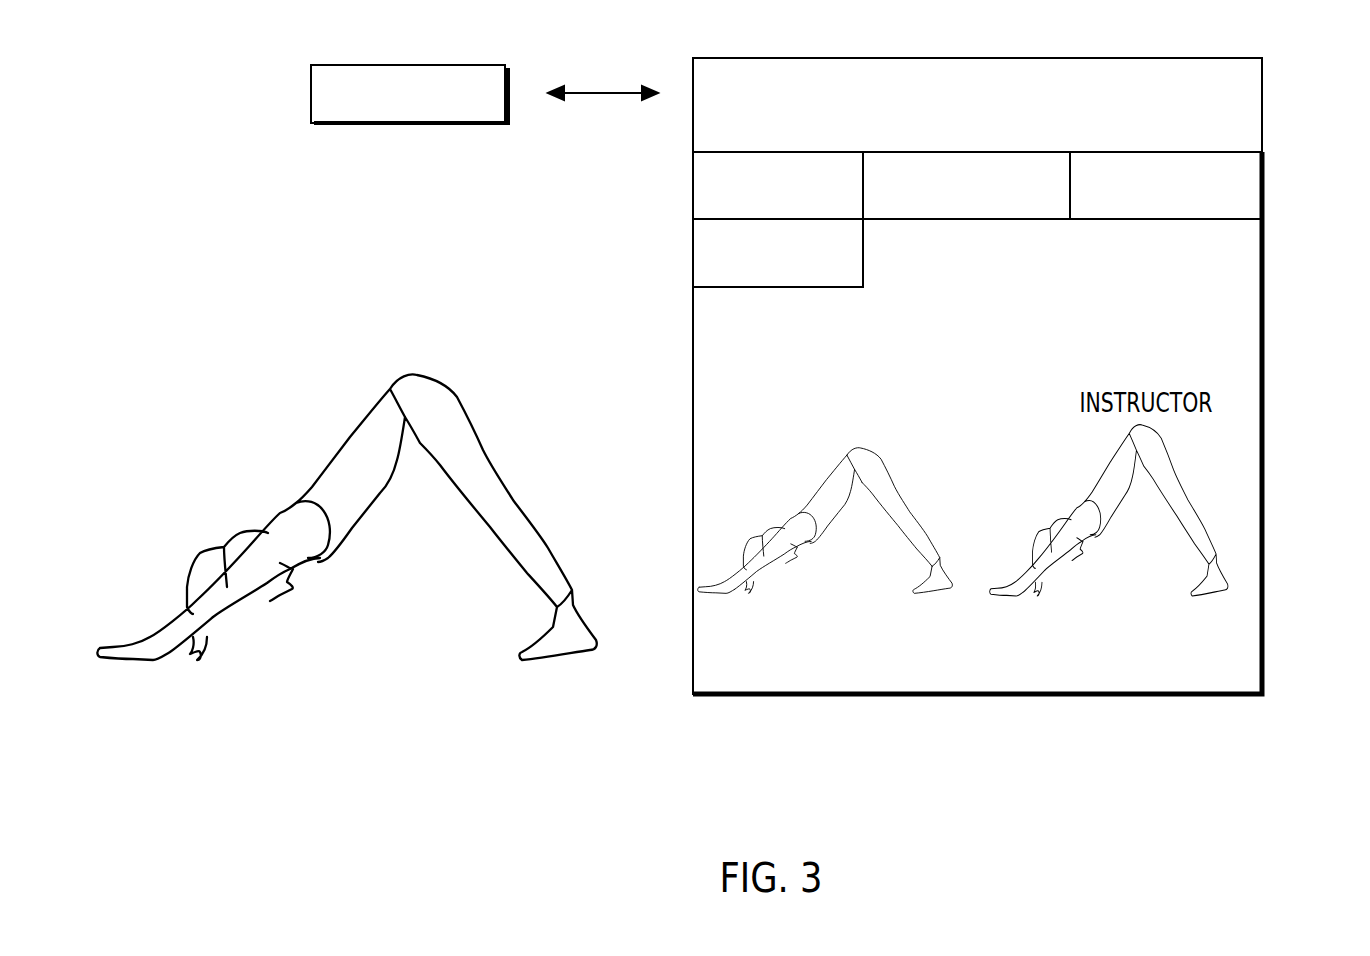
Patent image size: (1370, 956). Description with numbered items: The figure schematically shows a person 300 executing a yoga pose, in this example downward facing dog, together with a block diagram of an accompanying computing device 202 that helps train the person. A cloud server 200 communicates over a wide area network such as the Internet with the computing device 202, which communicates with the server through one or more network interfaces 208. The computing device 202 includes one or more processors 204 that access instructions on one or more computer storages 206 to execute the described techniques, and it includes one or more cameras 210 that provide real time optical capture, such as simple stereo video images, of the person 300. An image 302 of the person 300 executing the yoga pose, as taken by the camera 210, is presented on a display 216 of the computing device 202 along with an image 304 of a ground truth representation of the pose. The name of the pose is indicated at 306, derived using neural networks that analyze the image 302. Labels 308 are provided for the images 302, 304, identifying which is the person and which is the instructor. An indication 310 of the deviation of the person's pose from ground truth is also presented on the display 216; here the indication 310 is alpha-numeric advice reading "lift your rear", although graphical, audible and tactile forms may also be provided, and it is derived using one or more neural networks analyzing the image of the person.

The cloud server 200 is at (311, 97).
The computing device 202 is at (980, 67).
The processors 204 is at (698, 186).
The computer storages 206 is at (1155, 220).
The network interfaces 208 is at (698, 254).
The cameras 210 is at (955, 220).
The display 216 is at (1253, 465).
The person 300 is at (543, 524).
The image of the person 302 is at (815, 488).
The image of a ground truth representation of the pose 304 is at (1097, 480).
The name of the pose 306 is at (1115, 336).
The labels 308 is at (810, 630).
The indication of the deviation from ground truth 310 is at (1003, 630).